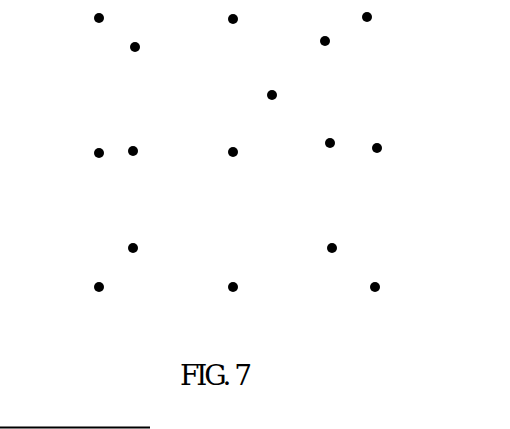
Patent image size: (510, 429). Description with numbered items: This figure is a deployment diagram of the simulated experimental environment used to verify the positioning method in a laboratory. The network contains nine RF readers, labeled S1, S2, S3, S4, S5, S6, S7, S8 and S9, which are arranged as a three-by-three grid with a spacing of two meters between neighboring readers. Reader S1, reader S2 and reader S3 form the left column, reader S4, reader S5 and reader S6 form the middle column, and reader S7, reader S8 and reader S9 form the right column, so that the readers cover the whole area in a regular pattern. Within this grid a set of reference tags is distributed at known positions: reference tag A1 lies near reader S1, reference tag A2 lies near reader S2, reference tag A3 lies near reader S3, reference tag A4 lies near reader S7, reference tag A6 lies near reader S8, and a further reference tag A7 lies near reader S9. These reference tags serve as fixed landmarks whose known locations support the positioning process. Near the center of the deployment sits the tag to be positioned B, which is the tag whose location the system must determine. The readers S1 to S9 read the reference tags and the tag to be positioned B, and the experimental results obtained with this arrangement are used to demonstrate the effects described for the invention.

The RF reader S1 is at (85, 29).
The RF reader S2 is at (85, 160).
The RF reader S3 is at (85, 294).
The RF reader S4 is at (219, 30).
The RF reader S5 is at (218, 160).
The RF reader S6 is at (218, 294).
The RF reader S7 is at (355, 29).
The RF reader S8 is at (360, 158).
The RF reader S9 is at (360, 294).
The reference tag A1 is at (119, 59).
The reference tag A2 is at (120, 164).
The reference tag A3 is at (121, 261).
The reference tag A4 is at (312, 53).
The reference tag A6 is at (317, 156).
The actuator position A7 is at (317, 261).
The tag to be positioned B is at (263, 102).